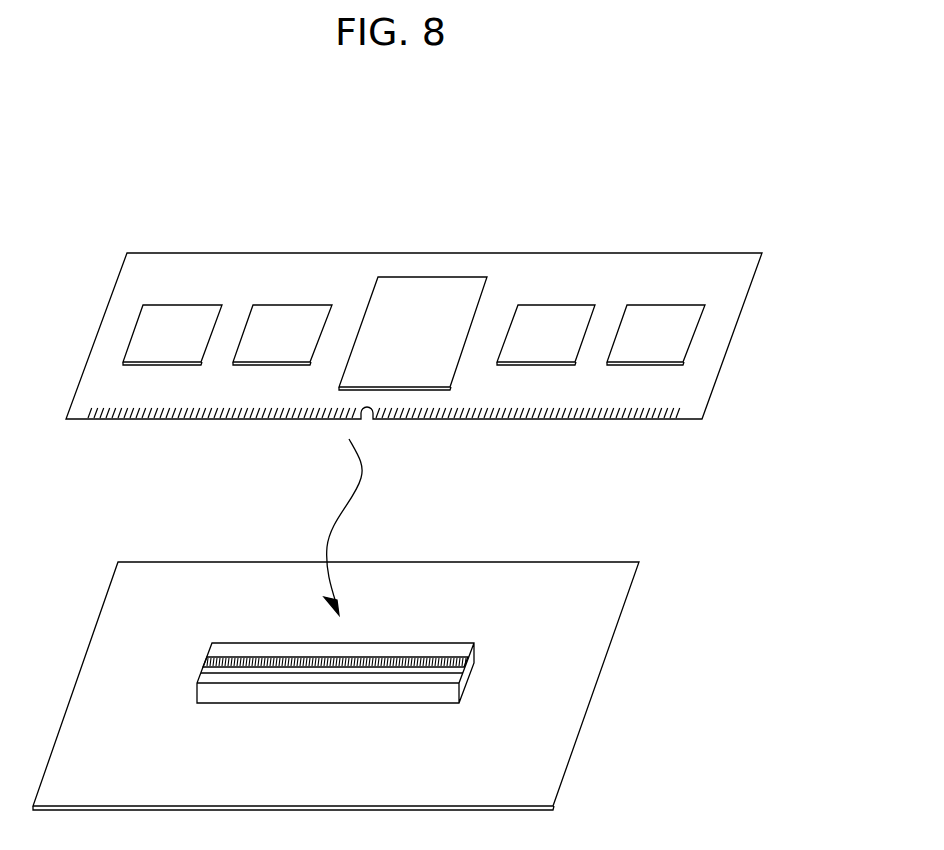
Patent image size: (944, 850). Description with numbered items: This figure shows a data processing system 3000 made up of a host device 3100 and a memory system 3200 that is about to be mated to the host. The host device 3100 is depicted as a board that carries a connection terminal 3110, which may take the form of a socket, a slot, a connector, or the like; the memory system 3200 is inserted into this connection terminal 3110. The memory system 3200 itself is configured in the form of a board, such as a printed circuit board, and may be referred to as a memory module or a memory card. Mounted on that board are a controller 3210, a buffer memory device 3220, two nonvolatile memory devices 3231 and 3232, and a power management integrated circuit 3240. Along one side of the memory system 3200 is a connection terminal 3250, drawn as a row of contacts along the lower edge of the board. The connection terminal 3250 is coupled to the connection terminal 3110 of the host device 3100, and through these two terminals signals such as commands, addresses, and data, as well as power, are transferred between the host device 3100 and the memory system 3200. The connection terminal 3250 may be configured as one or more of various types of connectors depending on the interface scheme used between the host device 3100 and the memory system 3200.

The data processing system 3000 is at (208, 209).
The host device 3100 is at (336, 686).
The connection terminal 3110 is at (474, 650).
The memory system 3200 is at (414, 361).
The controller 3210 is at (413, 333).
The buffer memory device 3220 is at (282, 335).
The nonvolatile memory device 3231 is at (546, 335).
The nonvolatile memory device 3232 is at (656, 335).
The power management integrated circuit 3240 is at (172, 335).
The connection terminal 3250 is at (110, 420).